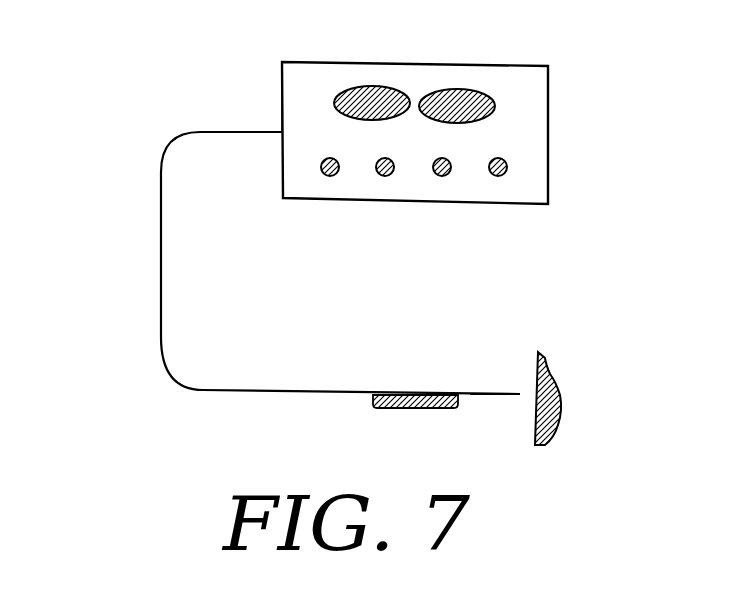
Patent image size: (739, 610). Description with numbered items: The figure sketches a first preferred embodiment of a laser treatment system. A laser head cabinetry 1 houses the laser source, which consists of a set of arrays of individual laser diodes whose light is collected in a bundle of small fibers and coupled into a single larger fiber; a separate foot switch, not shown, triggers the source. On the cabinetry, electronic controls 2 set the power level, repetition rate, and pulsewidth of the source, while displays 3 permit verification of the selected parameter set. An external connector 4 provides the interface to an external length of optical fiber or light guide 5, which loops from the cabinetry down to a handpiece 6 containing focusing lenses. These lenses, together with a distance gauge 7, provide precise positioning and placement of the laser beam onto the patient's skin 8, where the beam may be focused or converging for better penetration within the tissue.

The laser head cabinetry 1 is at (560, 116).
The electronic controls 2 is at (523, 176).
The displays 3 is at (475, 79).
The external connector 4 is at (270, 110).
The optical fiber or light guide 5 is at (141, 266).
The handpiece 6 is at (427, 424).
The distance gauge 7 is at (504, 370).
The patient's skin 8 is at (549, 432).